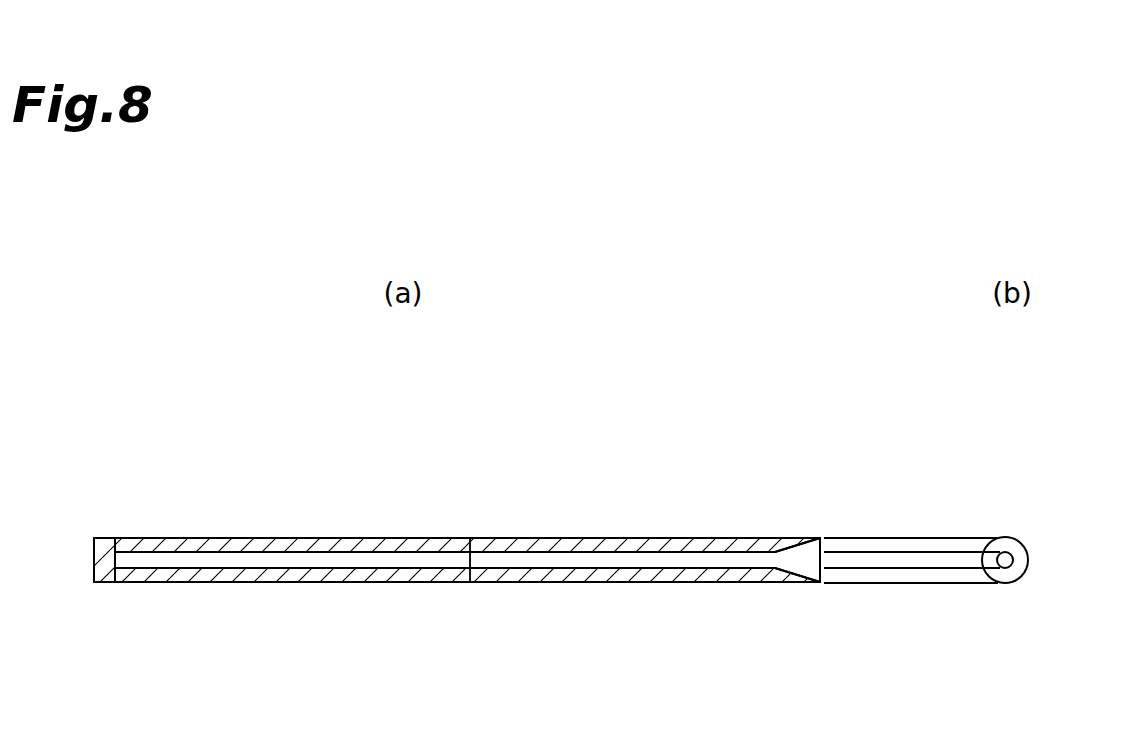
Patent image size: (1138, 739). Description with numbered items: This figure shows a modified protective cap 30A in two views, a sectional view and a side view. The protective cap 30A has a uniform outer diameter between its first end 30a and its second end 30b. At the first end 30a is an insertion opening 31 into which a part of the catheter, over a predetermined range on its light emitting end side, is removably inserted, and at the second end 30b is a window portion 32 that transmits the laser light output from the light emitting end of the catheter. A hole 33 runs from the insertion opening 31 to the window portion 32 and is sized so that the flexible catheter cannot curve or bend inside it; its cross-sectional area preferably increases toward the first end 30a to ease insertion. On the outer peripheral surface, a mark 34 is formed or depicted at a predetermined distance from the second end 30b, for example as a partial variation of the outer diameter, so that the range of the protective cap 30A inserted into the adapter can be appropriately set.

The protective cap 30A is at (592, 546).
The first end 30a is at (822, 584).
The second end 30b is at (95, 584).
The insertion opening 31 is at (822, 562).
The window portion 32 is at (100, 557).
The hole 33 is at (293, 557).
The mark 34 is at (470, 584).